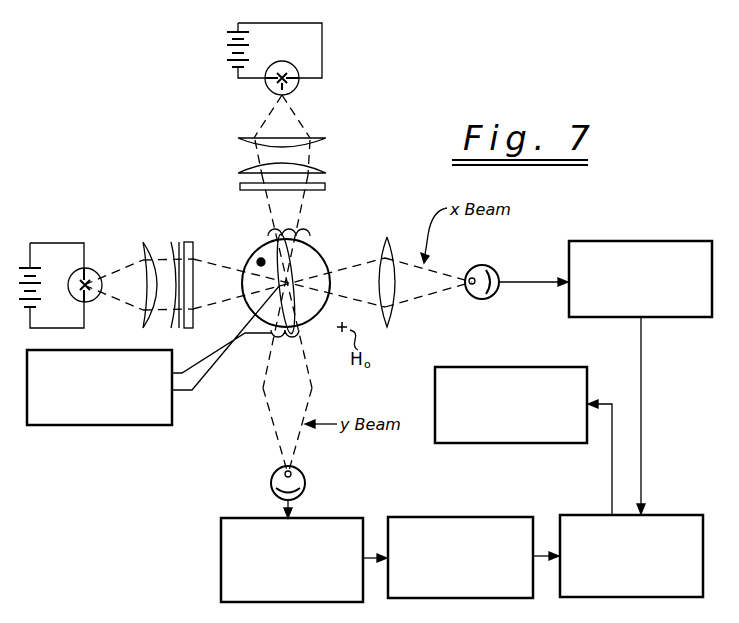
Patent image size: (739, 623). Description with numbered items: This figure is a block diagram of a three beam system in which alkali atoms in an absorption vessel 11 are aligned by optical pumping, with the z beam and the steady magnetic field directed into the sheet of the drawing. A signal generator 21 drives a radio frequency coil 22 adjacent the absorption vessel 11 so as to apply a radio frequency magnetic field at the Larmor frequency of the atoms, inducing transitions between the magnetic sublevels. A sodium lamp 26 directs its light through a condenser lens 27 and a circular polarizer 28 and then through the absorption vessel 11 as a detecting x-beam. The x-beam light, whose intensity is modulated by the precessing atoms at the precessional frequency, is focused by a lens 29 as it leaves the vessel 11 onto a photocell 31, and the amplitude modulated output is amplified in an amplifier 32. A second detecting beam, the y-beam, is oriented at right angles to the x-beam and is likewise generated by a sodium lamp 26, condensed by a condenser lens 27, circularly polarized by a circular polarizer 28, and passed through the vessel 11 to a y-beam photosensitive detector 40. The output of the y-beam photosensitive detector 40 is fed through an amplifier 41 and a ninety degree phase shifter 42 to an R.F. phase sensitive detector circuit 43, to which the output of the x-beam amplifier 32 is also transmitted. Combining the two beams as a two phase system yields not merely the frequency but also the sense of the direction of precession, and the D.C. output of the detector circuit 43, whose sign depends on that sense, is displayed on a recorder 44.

The absorption vessel 11 is at (258, 250).
The signal generator 21 is at (106, 415).
The radio frequency coil 22 is at (308, 233).
The sodium lamp 26 is at (268, 90).
The condenser lens 27 is at (250, 170).
The circular polarizer 28 is at (240, 186).
The lens 29 is at (390, 248).
The photocell 31 is at (483, 266).
The amplifier 32 is at (636, 248).
The y-beam photosensitive detector 40 is at (300, 478).
The amplifier 41 is at (318, 526).
The 90° phase shifter 42 is at (450, 524).
The R.F. phase sensitive detector circuit 43 is at (655, 522).
The recorder 44 is at (523, 375).